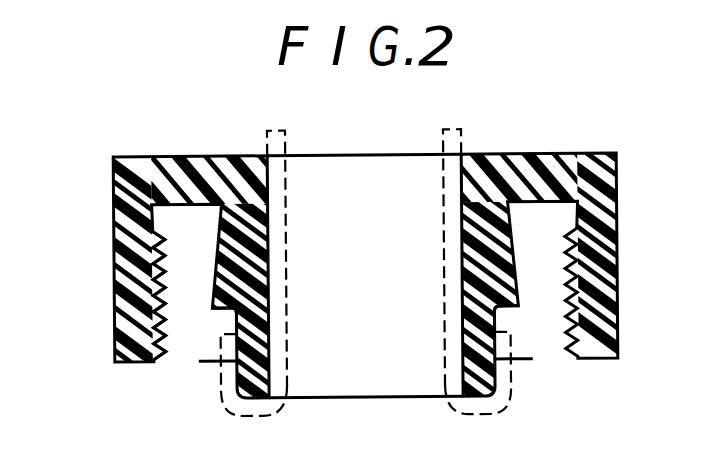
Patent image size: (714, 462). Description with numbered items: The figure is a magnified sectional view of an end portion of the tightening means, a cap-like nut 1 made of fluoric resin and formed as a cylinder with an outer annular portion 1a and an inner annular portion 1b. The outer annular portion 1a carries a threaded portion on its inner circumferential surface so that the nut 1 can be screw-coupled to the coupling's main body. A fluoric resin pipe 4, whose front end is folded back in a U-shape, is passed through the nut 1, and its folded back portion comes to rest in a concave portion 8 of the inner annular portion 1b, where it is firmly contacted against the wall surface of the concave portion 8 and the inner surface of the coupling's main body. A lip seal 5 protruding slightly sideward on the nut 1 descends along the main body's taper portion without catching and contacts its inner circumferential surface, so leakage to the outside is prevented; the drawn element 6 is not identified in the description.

The cap-like nut 1 is at (219, 155).
The outer annular portion 1a is at (620, 203).
The inner annular portion 1b is at (231, 237).
The fluoric resin pipe 4 is at (288, 254).
The lip seal 5 is at (514, 300).
The flared tube end 6 is at (498, 376).
The concave portion 8 is at (222, 316).